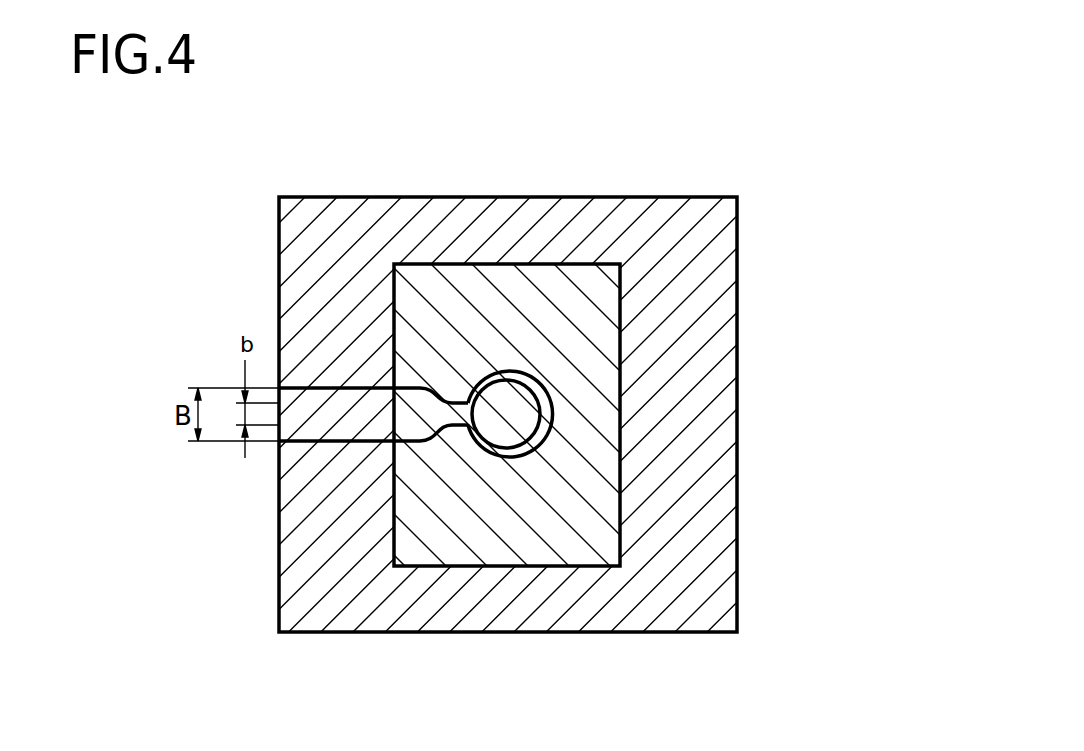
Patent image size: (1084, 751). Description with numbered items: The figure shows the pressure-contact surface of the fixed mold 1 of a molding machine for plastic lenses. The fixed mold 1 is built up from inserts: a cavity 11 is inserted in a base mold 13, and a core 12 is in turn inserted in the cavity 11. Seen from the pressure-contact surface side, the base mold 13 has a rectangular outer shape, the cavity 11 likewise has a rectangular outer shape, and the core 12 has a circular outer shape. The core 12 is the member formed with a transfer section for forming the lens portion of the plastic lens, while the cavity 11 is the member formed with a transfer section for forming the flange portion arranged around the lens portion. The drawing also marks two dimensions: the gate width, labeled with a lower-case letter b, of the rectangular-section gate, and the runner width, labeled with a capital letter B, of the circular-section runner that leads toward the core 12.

The fixed mold 1 is at (668, 197).
The cavity 11 is at (621, 323).
The core 12 is at (550, 401).
The base mold 13 is at (737, 499).